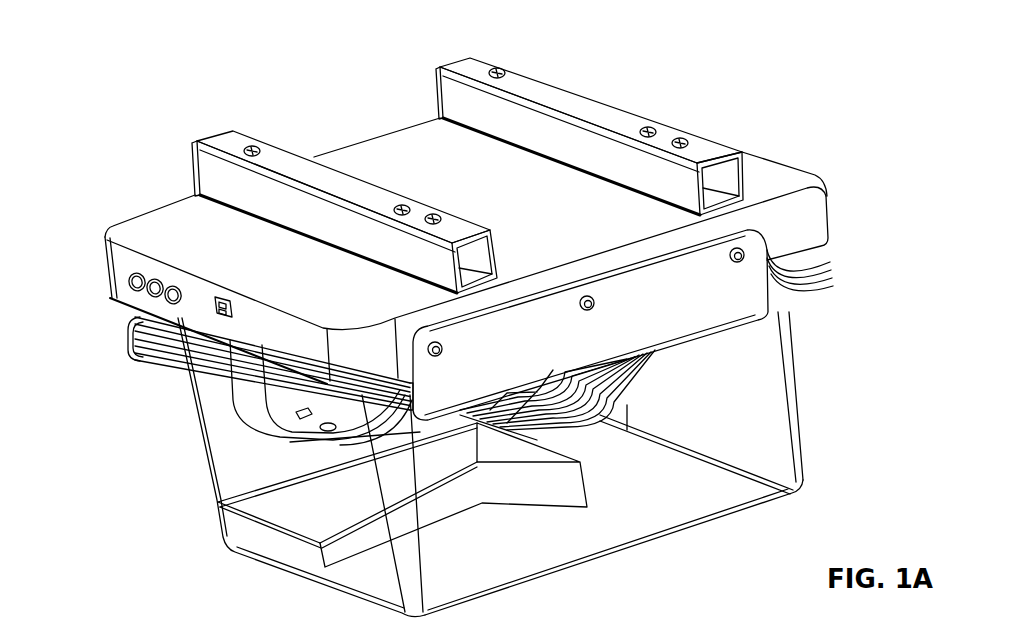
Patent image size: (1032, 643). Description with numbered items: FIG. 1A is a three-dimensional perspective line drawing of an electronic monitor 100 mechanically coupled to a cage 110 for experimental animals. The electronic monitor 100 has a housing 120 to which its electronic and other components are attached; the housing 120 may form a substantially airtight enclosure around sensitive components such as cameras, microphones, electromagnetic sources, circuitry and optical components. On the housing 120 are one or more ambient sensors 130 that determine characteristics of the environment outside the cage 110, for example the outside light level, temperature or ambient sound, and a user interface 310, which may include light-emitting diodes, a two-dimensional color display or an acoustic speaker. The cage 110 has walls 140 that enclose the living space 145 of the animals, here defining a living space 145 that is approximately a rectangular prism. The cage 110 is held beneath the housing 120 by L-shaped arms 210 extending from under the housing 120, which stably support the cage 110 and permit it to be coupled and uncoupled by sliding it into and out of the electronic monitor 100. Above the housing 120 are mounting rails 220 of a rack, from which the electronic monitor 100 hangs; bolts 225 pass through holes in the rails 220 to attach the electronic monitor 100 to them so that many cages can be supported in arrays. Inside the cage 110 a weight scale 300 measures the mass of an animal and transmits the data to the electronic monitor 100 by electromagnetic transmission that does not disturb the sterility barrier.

The electronic monitor 100 is at (831, 208).
The cage 110 is at (798, 380).
The housing 120 is at (742, 134).
The ambient sensor 130 is at (215, 307).
The wall 140 is at (746, 449).
The living space 145 is at (803, 483).
The arm 210 is at (723, 300).
The mounting rail 220 is at (213, 134).
The bolt 225 is at (257, 147).
The weight scale 300 is at (550, 507).
The user interface 310 is at (106, 300).